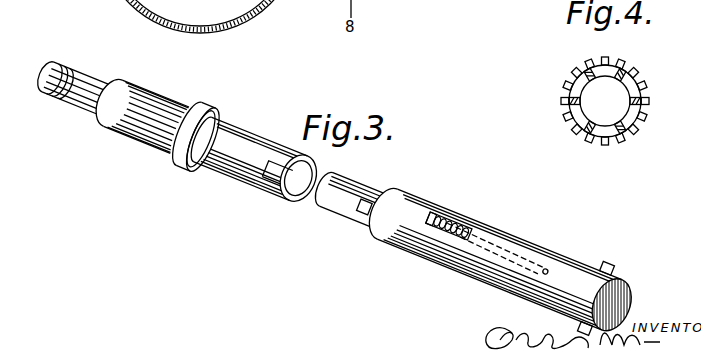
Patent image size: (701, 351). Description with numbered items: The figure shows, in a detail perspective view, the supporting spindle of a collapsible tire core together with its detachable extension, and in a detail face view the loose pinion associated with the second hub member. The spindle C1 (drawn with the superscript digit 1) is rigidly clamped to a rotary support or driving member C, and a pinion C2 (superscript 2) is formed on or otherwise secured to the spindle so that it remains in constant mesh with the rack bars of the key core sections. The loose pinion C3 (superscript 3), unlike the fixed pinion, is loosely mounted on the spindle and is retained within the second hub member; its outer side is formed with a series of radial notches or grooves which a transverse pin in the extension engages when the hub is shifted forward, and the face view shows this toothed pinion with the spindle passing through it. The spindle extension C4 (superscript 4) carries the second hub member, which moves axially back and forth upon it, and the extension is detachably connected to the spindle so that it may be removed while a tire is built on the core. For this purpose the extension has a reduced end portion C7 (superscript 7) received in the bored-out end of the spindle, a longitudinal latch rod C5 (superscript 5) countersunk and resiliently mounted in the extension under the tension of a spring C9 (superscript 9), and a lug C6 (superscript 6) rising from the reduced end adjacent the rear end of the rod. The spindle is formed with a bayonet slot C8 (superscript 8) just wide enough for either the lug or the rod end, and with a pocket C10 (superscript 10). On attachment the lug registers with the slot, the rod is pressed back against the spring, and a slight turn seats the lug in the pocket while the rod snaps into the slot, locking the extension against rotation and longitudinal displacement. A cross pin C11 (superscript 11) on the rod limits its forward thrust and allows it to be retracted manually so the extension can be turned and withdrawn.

In FIG. 3, the rotary support or driving member C is at (610, 273).
In FIG. 3, the spindle C1 is at (250, 151).
In FIG. 4, the spindle C1 is at (608, 101).
In FIG. 3, the pinion C2 is at (126, 121).
In FIG. 4, the loose pinion C3 is at (618, 98).
In FIG. 3, the spindle extension C4 is at (507, 263).
In FIG. 3, the latch rod C5 is at (397, 206).
In FIG. 3, the lug C6 is at (345, 225).
In FIG. 3, the reduced end portion C7 is at (347, 192).
In FIG. 3, the bayonet slot C8 is at (286, 188).
In FIG. 3, the spring C9 is at (496, 232).
In FIG. 3, the pocket C10 is at (254, 191).
In FIG. 3, the cross pin C11 is at (449, 209).
In FIG. 3, the sleeve / keys 1 is at (231, 140).
In FIG. 4, the sleeve / keys 1 is at (667, 96).
In FIG. 3, the splined shaft with collar 2 is at (143, 100).
In FIG. 4, the toothed ring 3 is at (637, 82).
In FIG. 3, the barrel 4 is at (480, 276).
In FIG. 3, the shoulder 5 is at (406, 204).
In FIG. 3, the pin 6 is at (356, 207).
In FIG. 3, the reduced end 7 is at (341, 190).
In FIG. 3, the end key 8 is at (281, 188).
In FIG. 3, the passage 9 is at (454, 227).
In FIG. 3, the slot 10 is at (262, 188).
In FIG. 3, the spring 11 is at (437, 213).